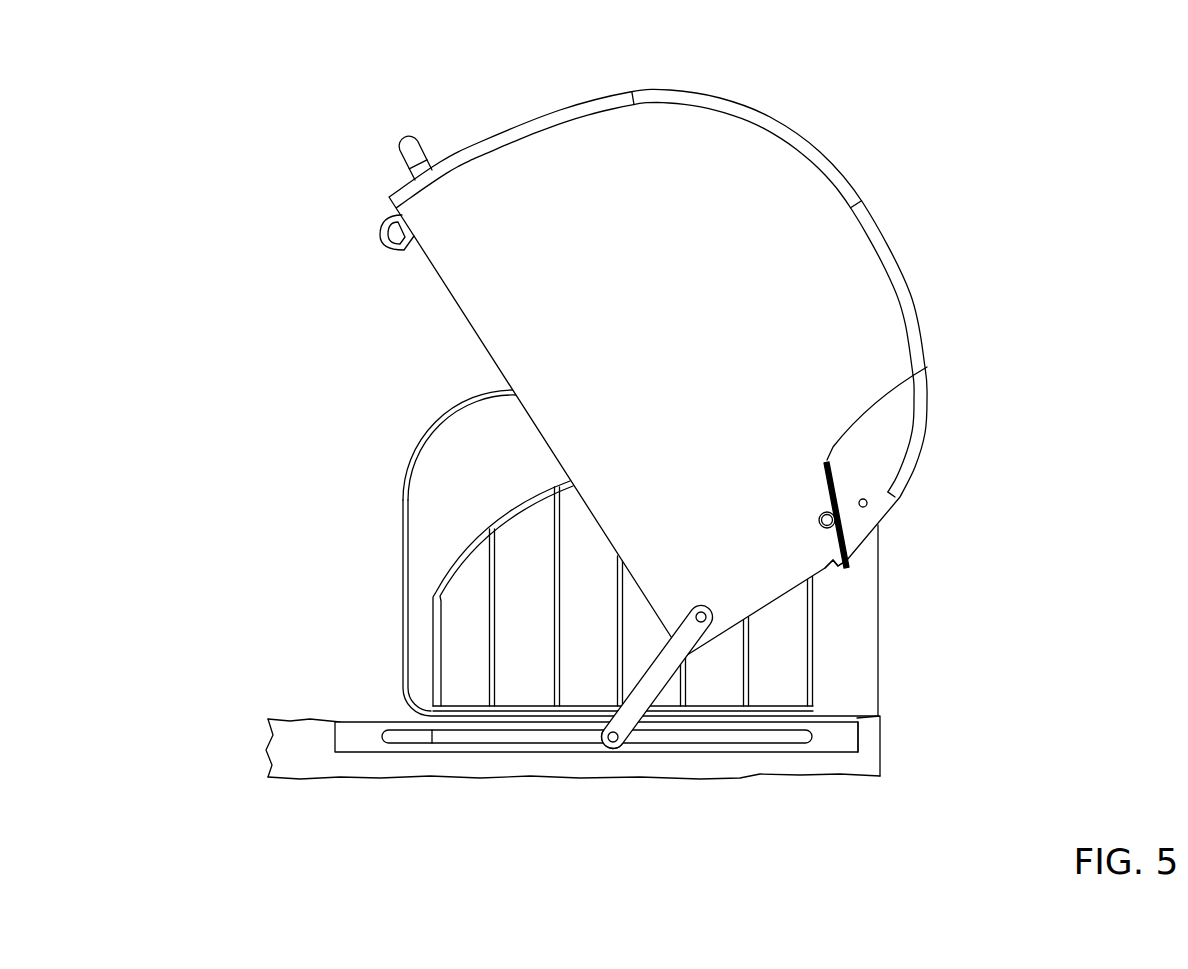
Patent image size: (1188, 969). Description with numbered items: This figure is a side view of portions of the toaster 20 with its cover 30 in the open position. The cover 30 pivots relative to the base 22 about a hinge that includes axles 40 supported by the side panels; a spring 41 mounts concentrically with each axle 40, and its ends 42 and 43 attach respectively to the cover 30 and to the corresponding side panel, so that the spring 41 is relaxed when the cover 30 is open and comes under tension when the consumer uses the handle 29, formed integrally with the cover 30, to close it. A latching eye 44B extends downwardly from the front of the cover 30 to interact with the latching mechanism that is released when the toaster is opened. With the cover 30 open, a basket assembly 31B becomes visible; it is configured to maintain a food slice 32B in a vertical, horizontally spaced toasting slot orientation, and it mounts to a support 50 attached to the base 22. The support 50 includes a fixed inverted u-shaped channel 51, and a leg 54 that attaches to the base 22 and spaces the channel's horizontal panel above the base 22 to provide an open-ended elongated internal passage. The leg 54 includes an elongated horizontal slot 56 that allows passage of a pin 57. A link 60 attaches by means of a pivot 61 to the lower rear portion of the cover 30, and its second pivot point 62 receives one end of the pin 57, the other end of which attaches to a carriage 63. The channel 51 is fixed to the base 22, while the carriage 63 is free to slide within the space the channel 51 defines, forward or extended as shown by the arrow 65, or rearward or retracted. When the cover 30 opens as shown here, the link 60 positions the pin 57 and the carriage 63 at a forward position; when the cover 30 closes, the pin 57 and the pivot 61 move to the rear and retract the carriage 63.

The toaster 20 is at (833, 120).
The base 22 is at (870, 742).
The handle 29 is at (420, 132).
The cover 30 is at (906, 292).
The basket assembly 31B is at (425, 632).
The food slice 32B is at (428, 517).
The axle 40 is at (835, 520).
The spring 41 is at (838, 484).
The spring end 42 is at (930, 366).
The spring end 43 is at (840, 553).
The latching eye 44B is at (378, 238).
The support 50 is at (472, 760).
The channel 51 is at (325, 738).
The leg 54 is at (840, 738).
The slot 56 is at (557, 737).
The pin 57 is at (606, 735).
The link 60 is at (650, 696).
The pivot 61 is at (712, 618).
The second pivot point 62 is at (622, 742).
The carriage 63 is at (442, 738).
The arrow 65 is at (740, 806).